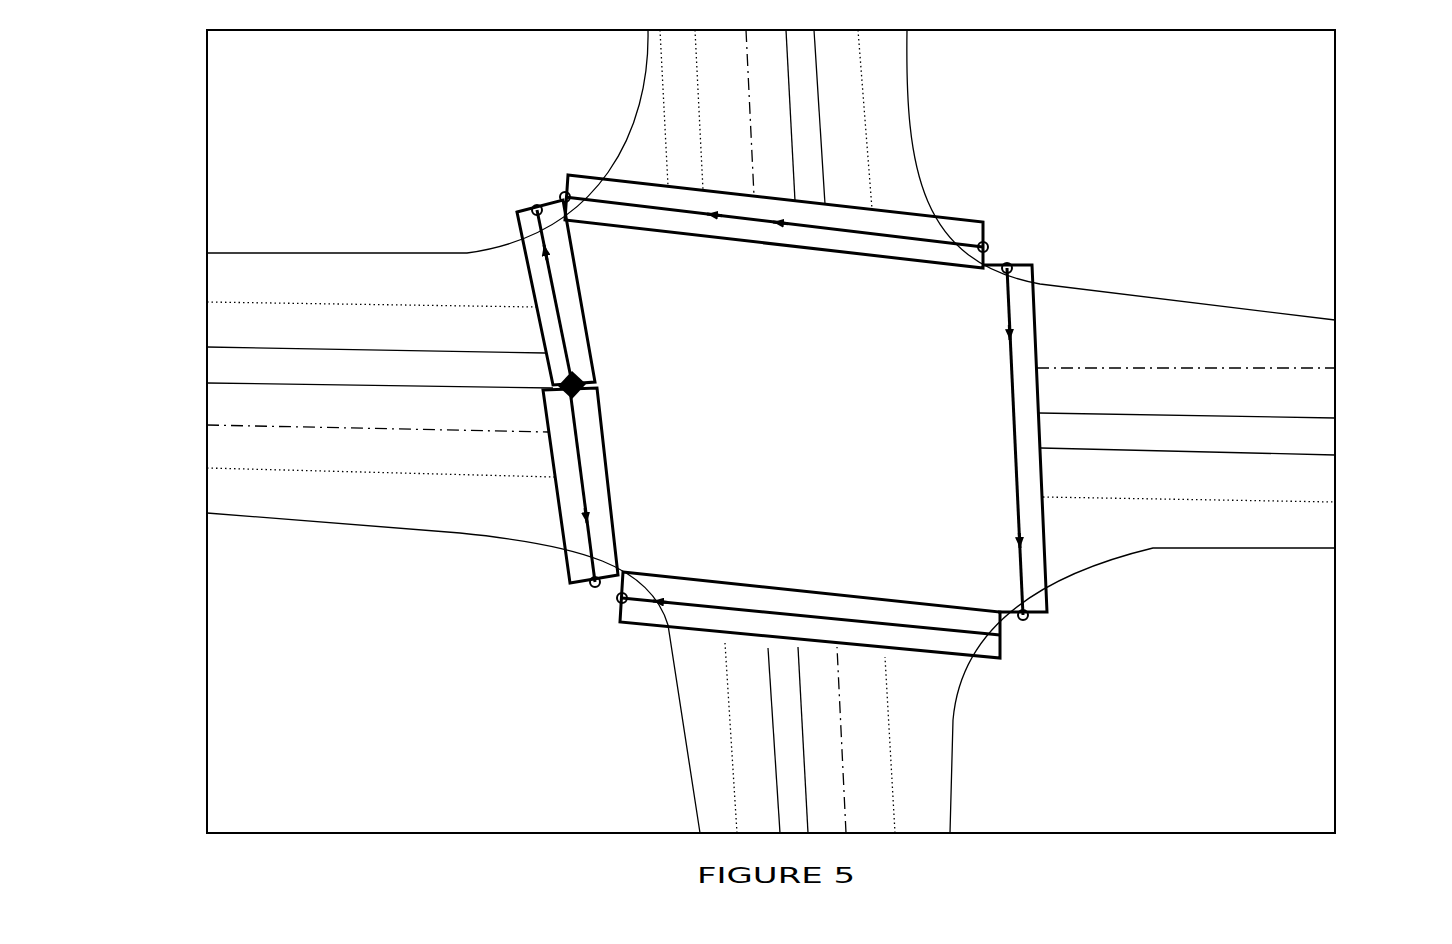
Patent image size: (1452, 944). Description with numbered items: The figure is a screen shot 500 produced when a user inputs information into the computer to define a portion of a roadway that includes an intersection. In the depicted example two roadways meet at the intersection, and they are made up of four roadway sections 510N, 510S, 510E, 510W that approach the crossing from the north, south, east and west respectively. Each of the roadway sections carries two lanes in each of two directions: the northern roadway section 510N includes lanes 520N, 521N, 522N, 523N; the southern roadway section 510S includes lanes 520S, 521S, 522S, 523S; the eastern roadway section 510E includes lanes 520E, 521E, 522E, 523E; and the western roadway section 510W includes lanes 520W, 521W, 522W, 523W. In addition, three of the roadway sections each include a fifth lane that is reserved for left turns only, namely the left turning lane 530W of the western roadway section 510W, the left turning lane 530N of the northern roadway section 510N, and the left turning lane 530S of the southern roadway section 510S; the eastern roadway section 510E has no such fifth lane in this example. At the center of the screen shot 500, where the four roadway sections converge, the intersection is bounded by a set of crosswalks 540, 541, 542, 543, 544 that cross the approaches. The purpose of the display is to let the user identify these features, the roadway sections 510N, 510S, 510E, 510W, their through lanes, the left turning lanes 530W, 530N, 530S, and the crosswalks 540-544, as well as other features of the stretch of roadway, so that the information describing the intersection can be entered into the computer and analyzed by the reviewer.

The screen shot 500 is at (157, 60).
The roadway section 510N is at (605, 78).
The roadway section 510E is at (1162, 278).
The roadway section 510W is at (332, 228).
The roadway section 510S is at (677, 748).
The lane 520N is at (875, 52).
The lane 521N is at (833, 78).
The lane 522N is at (718, 105).
The lane 523N is at (675, 132).
The fifth lane 530N is at (760, 155).
The lane 520S is at (915, 705).
The lane 521S is at (858, 732).
The lane 522S is at (733, 758).
The lane 523S is at (715, 785).
The fifth lane 530S is at (822, 808).
The lane 520W is at (253, 276).
The lane 521W is at (253, 326).
The lane 522W is at (253, 451).
The lane 523W is at (253, 492).
The fifth lane 530W is at (253, 402).
The lane 520E is at (1292, 347).
The lane 521E is at (1292, 397).
The lane 522E is at (1292, 473).
The lane 523E is at (1292, 522).
The crosswalk 540 is at (588, 582).
The crosswalk 541 is at (533, 208).
The crosswalk 542 is at (563, 190).
The crosswalk 543 is at (1005, 263).
The crosswalk 544 is at (1003, 633).